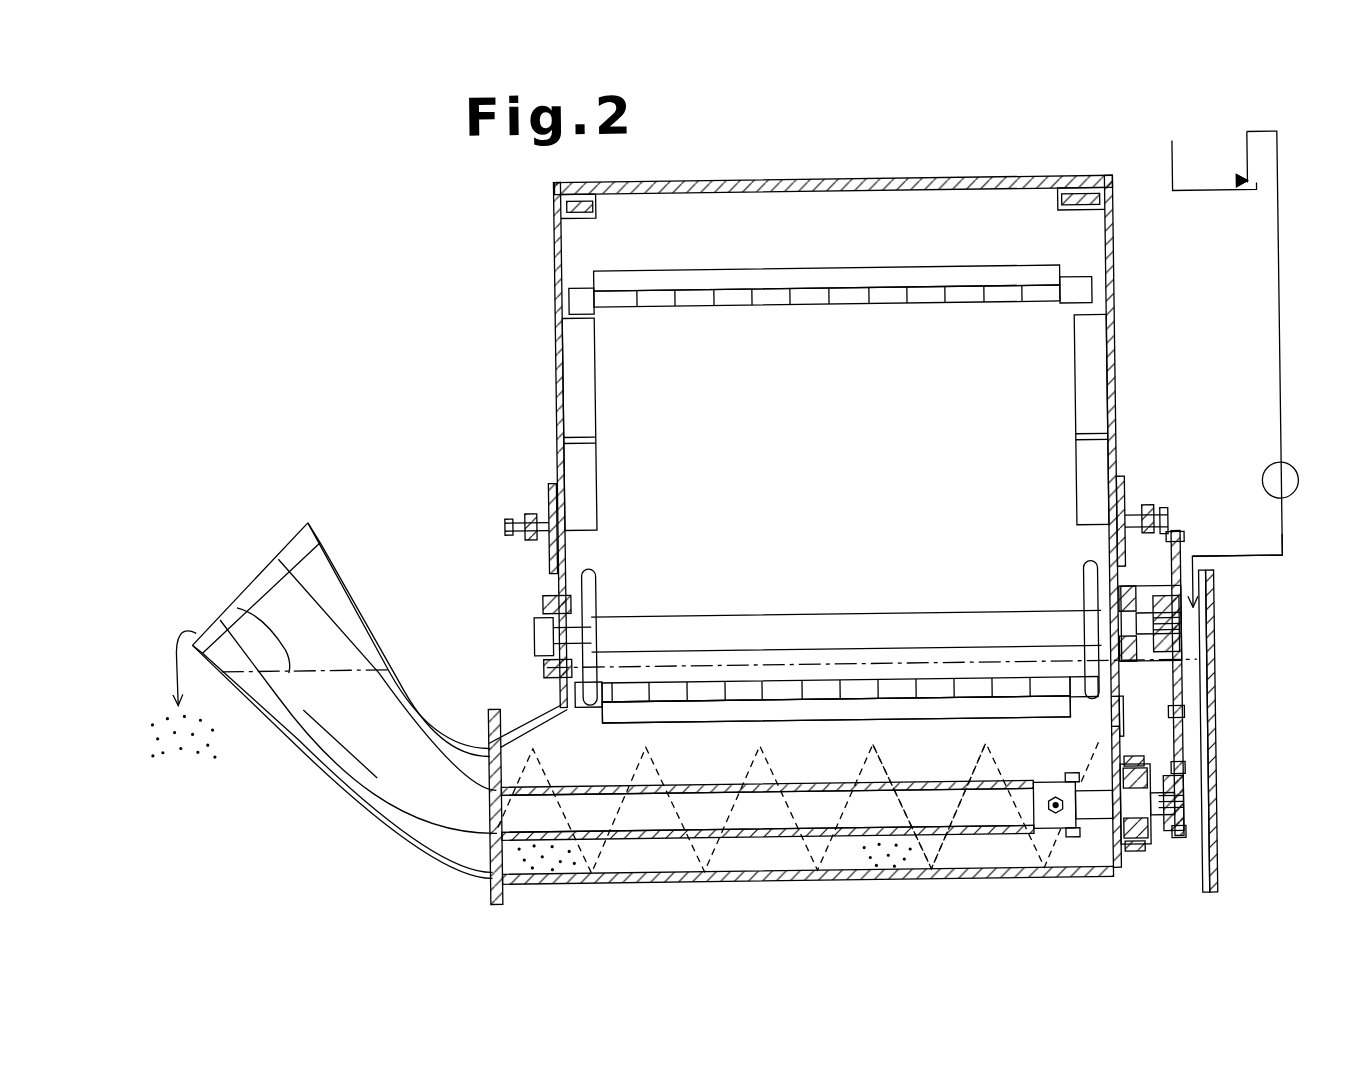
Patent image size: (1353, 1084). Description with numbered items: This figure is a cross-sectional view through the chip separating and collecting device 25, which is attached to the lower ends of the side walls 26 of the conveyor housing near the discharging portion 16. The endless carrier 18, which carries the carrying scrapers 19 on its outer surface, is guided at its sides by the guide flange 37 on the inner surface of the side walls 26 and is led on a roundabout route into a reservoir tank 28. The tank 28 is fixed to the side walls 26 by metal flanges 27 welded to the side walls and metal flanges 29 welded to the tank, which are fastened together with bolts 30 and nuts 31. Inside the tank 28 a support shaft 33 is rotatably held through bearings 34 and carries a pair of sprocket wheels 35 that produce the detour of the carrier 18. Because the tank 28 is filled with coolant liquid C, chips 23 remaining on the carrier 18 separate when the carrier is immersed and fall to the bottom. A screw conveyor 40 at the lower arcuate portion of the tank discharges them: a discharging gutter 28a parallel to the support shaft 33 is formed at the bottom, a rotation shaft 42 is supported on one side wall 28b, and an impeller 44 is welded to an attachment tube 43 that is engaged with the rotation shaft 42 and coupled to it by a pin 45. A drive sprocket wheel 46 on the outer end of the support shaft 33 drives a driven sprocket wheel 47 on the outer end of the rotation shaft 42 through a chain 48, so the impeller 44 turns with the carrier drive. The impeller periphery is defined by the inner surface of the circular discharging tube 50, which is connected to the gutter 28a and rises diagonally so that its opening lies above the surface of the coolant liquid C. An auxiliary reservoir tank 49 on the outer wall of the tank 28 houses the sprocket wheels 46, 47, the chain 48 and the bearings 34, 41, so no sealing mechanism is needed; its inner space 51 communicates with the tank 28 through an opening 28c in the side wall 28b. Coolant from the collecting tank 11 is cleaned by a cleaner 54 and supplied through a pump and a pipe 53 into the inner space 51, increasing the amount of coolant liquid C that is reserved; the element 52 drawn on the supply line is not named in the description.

The collecting tank 11 is at (1177, 160).
The discharging portion 16 is at (953, 182).
The endless carrier 18 is at (926, 270).
The carrying scrapers 19 is at (720, 708).
The chips 23 is at (180, 752).
The device 25 is at (1197, 500).
The side walls 26 is at (558, 368).
The metal flanges 27 is at (550, 497).
The reservoir tank 28 is at (910, 862).
The discharging gutter 28a is at (1025, 863).
The side wall 28b is at (1122, 680).
The opening 28c is at (1110, 726).
The metal flanges 29 is at (505, 538).
The bolts 30 is at (527, 516).
The nuts 31 is at (512, 522).
The support shaft 33 is at (775, 625).
The bearings 34 is at (540, 603).
The sprocket wheels 35 is at (652, 543).
The guide flange 37 is at (577, 454).
The screw conveyor 40 is at (777, 884).
The bearings 41 is at (1140, 855).
The rotation shaft 42 is at (1088, 843).
The attachment tube 43 is at (663, 838).
The impeller 44 is at (892, 752).
The pin 45 is at (1065, 770).
The drive sprocket wheel 46 is at (1190, 680).
The driven sprocket wheel 47 is at (1198, 805).
The chain 48 is at (1195, 757).
The auxiliary reservoir tank 49 is at (1214, 636).
The discharging tube 50 is at (402, 866).
The inner space 51 is at (1153, 753).
The valve 52 is at (1266, 470).
The pipe 53 is at (1225, 565).
The cleaner 54 is at (1238, 185).
The coolant liquid C is at (880, 658).